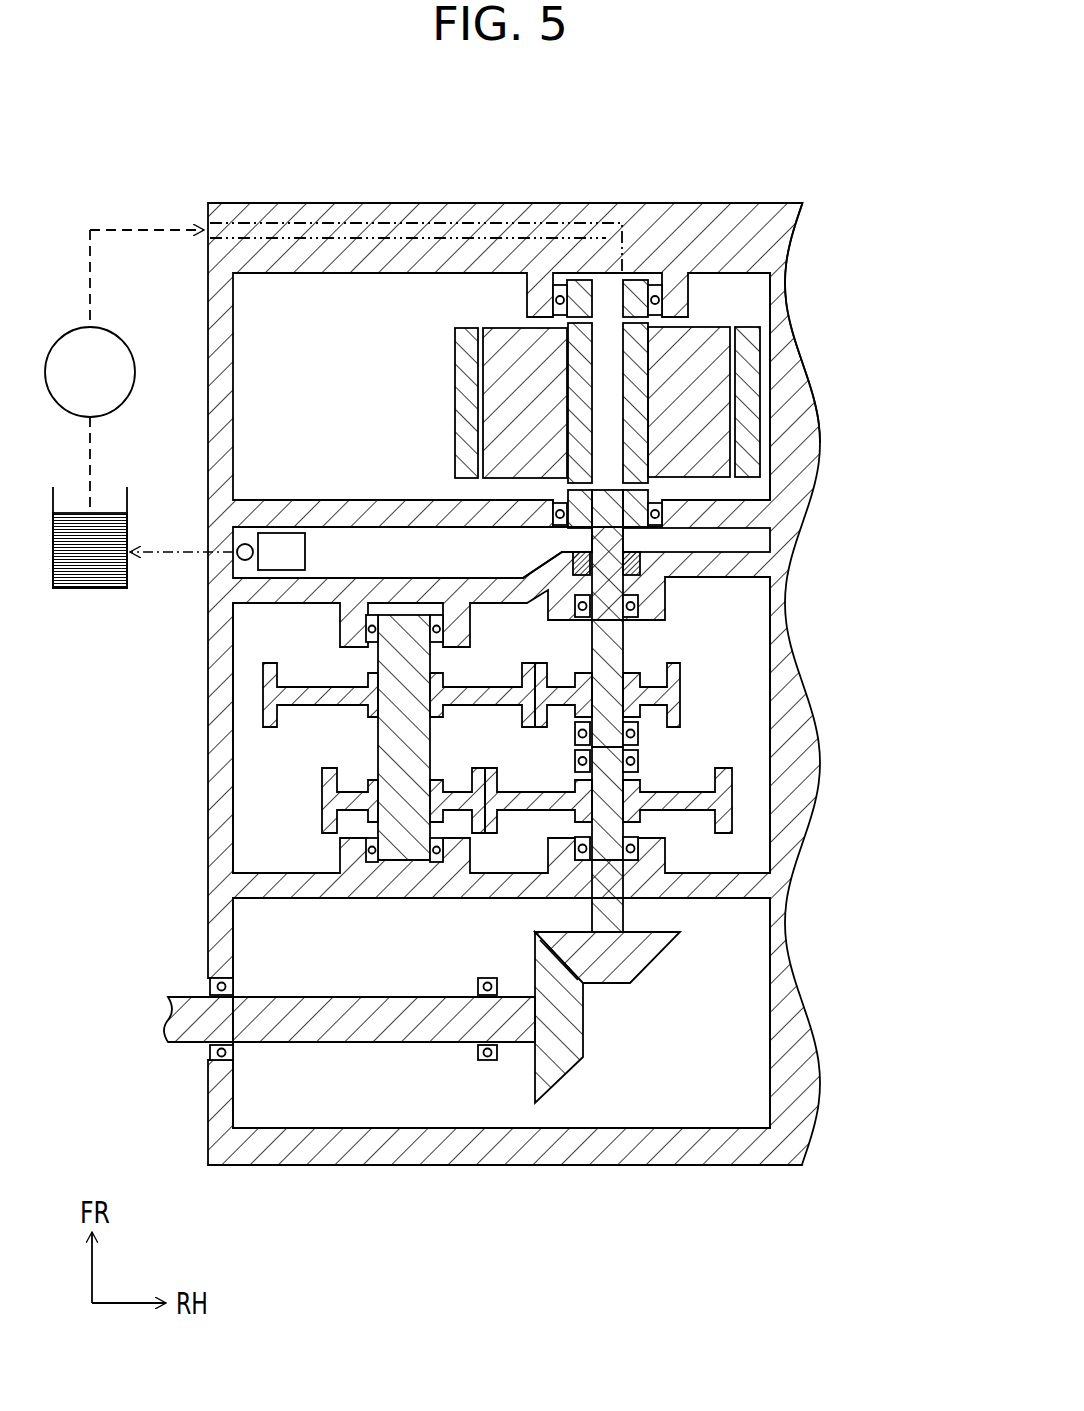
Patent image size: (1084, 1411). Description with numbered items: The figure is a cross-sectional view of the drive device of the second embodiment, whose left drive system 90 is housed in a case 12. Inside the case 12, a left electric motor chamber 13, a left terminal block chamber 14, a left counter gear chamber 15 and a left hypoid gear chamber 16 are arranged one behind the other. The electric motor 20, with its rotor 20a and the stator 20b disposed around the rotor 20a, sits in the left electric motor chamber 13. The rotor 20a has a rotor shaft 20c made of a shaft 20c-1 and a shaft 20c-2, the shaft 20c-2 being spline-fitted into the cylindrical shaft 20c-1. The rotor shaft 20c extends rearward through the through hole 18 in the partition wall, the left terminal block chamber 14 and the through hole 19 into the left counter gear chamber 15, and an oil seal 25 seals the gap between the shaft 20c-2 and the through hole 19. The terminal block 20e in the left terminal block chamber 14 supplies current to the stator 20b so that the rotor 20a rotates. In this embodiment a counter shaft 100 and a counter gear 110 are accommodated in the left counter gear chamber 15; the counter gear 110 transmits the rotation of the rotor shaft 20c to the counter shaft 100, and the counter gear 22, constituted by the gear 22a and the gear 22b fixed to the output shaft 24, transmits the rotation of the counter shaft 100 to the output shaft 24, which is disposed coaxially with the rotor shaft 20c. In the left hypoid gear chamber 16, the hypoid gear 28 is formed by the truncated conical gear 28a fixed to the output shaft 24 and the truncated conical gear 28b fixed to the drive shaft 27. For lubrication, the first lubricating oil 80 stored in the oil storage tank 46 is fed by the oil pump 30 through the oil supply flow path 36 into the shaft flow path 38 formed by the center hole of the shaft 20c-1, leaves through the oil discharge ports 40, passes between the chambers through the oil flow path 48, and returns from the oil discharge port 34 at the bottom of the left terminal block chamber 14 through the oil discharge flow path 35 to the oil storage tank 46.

The case 12 is at (750, 1150).
The left electric motor chamber 13 is at (718, 300).
The left terminal block chamber 14 is at (278, 538).
The left counter gear chamber 15 is at (255, 833).
The left hypoid gear chamber 16 is at (338, 1100).
The through hole 18 is at (656, 492).
The through hole 19 is at (636, 626).
The electric motor 20 is at (659, 273).
The rotor 20a is at (515, 355).
The stator 20b is at (462, 355).
The rotor shaft 20c is at (803, 399).
The shaft 20c-1 is at (640, 372).
The shaft 20c-2 is at (665, 440).
The terminal block 20e is at (245, 544).
The counter gear 22 is at (754, 774).
The gear 22a is at (640, 735).
The gear 22b is at (640, 762).
The output shaft 24 is at (612, 835).
The oil seal 25 is at (635, 545).
The drive shaft 27 is at (418, 1030).
The hypoid gear 28 is at (610, 1121).
The gear 28a is at (625, 965).
The gear 28b is at (555, 1083).
The oil pump 30 is at (78, 327).
The oil discharge port 34 is at (258, 545).
The oil discharge flow path 35 is at (160, 556).
The oil supply flow path 36 is at (125, 230).
The shaft flow path 38 is at (607, 350).
The oil discharge ports 40 is at (635, 318).
The oil storage tank 46 is at (50, 570).
The oil flow path 48 is at (315, 527).
The first lubricating oil 80 is at (90, 575).
The left drive system 90 is at (803, 168).
The counter shaft 100 is at (397, 750).
The counter gear 110 is at (333, 690).